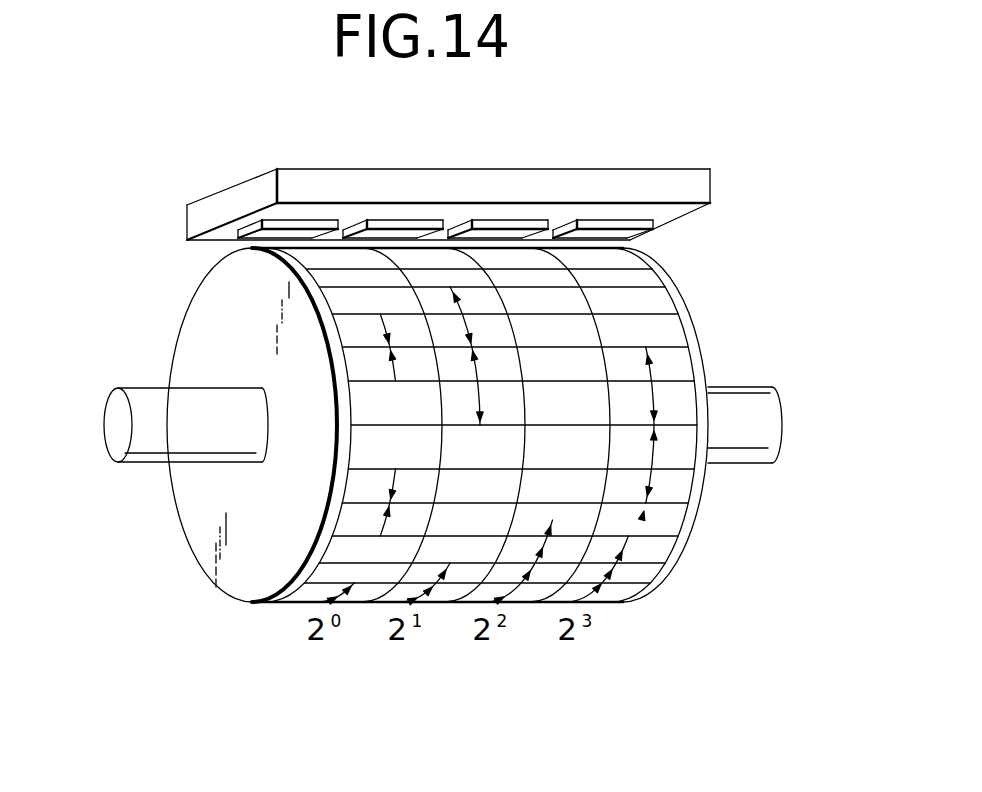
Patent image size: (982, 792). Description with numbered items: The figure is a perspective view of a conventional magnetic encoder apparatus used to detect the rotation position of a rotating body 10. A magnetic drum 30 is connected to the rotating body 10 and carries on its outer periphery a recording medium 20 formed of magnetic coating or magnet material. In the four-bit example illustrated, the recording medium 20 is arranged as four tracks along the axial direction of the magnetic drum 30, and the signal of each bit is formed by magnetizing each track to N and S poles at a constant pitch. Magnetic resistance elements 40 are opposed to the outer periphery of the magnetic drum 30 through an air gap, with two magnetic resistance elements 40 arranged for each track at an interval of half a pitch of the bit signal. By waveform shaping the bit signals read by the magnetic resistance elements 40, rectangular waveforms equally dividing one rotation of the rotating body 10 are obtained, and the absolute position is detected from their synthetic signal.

The rotating body 10 is at (148, 388).
The recording medium 20 is at (368, 450).
The magnetic drum 30 is at (193, 297).
The magnetic resistance element 40 is at (312, 220).